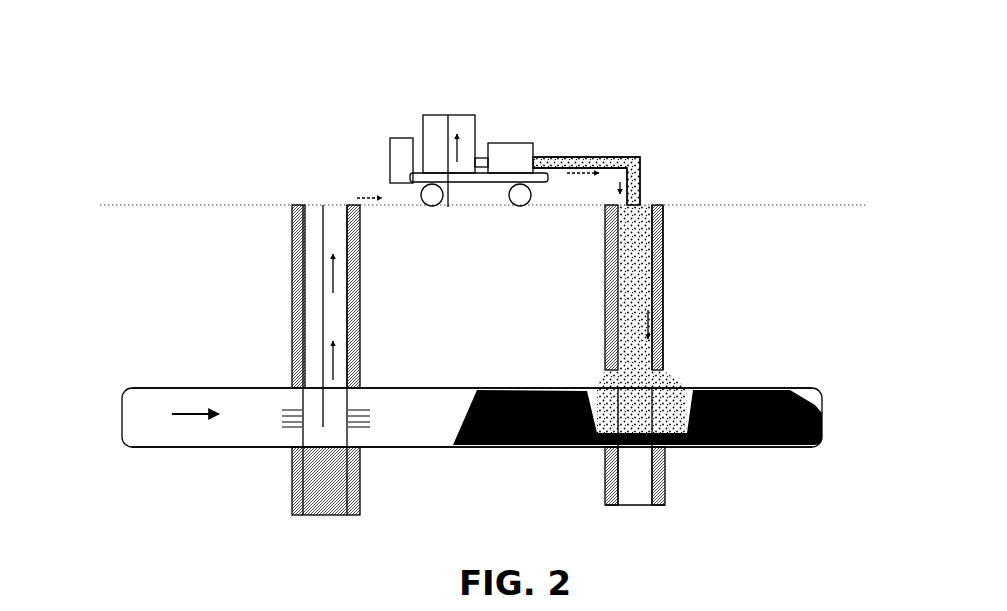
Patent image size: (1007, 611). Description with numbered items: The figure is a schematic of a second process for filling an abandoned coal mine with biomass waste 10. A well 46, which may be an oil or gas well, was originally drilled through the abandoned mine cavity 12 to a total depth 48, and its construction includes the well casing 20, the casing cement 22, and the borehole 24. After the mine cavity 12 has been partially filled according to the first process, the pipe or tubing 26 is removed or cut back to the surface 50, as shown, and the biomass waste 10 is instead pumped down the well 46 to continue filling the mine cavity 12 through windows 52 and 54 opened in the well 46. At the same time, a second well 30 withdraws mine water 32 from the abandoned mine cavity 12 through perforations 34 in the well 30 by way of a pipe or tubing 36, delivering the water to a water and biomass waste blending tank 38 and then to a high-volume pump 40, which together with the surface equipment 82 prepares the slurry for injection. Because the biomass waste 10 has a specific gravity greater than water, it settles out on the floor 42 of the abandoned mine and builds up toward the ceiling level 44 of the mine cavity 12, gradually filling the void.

The biomass waste 10 is at (638, 177).
The abandoned mine cavity 12 is at (472, 417).
The well casing 20 is at (659, 268).
The casing cement 22 is at (663, 245).
The borehole 24 is at (666, 223).
The pipe or tubing 26 is at (629, 151).
The second well 30 is at (277, 261).
The mine water 32 is at (180, 413).
The perforations 34 is at (271, 409).
The pipe or tubing 36 is at (326, 233).
The water and biomass waste blending tank 38 is at (421, 123).
The high-volume pump 40 is at (523, 142).
The floor 42 is at (428, 449).
The ceiling level 44 is at (440, 386).
The well 46 is at (589, 271).
The total depth 48 is at (673, 505).
The surface 50 is at (208, 203).
The window 52 is at (591, 376).
The window 54 is at (671, 372).
The surface equipment 82 is at (432, 97).